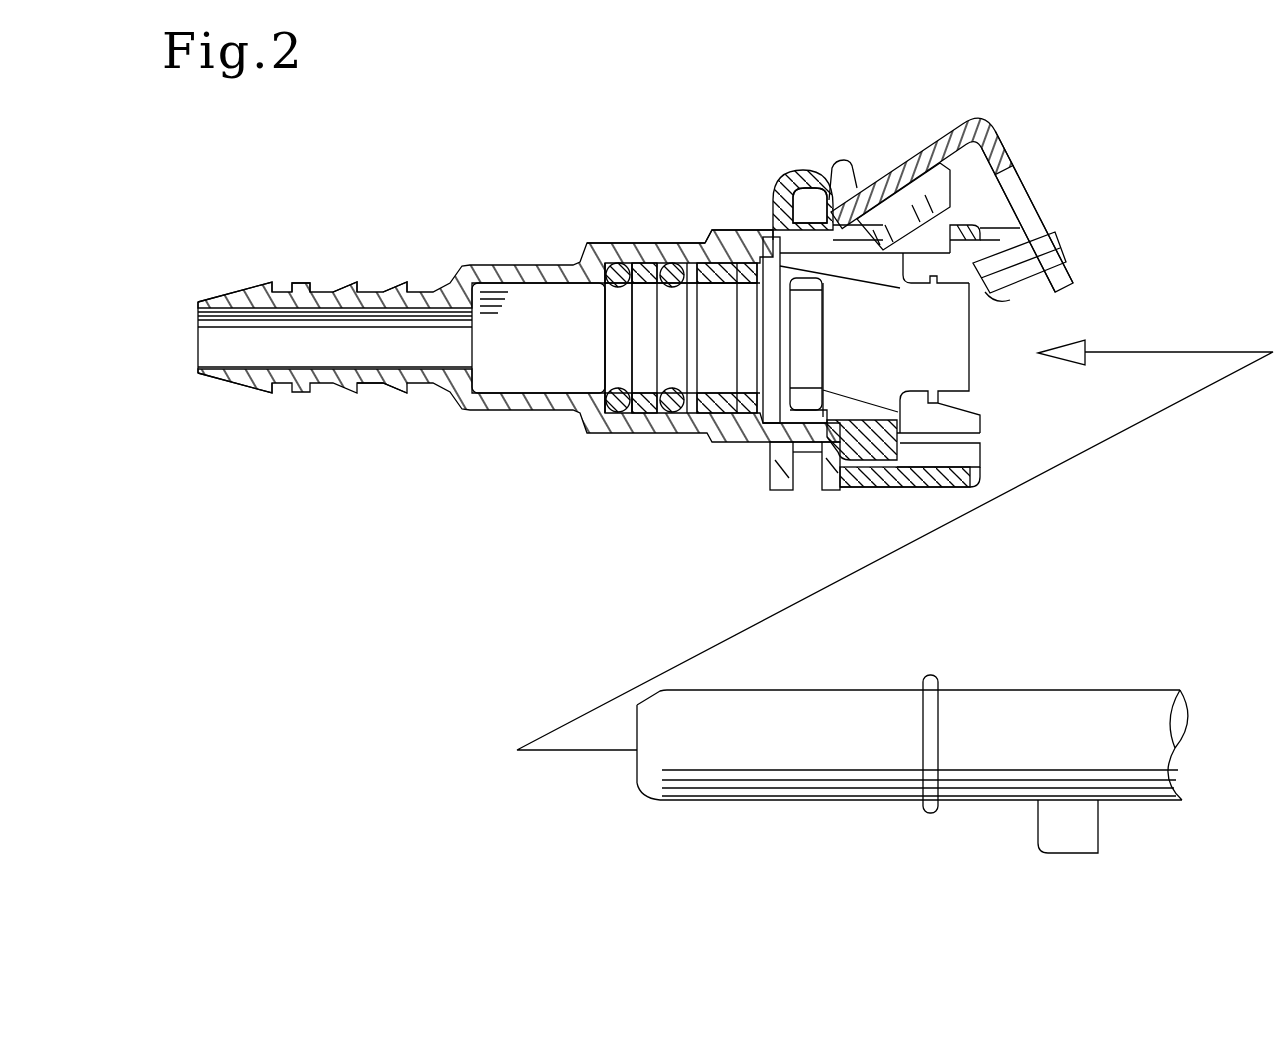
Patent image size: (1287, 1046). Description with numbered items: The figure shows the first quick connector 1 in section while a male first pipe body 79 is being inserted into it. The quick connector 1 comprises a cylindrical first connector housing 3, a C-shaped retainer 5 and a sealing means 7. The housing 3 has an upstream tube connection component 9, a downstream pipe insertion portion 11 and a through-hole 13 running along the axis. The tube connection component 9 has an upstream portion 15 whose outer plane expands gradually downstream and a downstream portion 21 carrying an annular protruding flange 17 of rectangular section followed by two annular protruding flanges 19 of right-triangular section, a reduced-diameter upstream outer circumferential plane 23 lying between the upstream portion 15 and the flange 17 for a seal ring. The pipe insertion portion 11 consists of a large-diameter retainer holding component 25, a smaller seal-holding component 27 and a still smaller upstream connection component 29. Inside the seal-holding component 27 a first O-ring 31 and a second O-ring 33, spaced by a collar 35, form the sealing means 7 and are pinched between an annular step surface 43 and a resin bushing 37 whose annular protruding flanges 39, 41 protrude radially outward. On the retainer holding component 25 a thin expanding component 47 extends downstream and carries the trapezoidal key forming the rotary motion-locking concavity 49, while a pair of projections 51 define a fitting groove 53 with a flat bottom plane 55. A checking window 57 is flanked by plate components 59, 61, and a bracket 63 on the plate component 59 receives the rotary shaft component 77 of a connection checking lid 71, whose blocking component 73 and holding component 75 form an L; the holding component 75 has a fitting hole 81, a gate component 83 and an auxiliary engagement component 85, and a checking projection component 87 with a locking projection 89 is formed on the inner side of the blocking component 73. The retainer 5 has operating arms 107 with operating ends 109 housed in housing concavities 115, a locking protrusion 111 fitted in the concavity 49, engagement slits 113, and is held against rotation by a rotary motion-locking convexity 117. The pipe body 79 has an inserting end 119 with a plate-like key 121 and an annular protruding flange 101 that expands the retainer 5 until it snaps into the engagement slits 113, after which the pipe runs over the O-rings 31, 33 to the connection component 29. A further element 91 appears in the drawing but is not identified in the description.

The quick connector 1 is at (242, 177).
The first connector housing 3 is at (510, 248).
The retainer 5 is at (988, 358).
The sealing means 7 is at (602, 357).
The tube connection component 9 is at (340, 262).
The pipe insertion portion 11 is at (709, 222).
The through-hole 13 is at (340, 350).
The upstream portion 15 is at (270, 290).
The annular protruding flange 17 is at (300, 283).
The annular protruding flanges 19 is at (395, 288).
The downstream portion 21 is at (372, 378).
The upstream outer circumferential plane 23 is at (287, 386).
The retainer holding component 25 is at (950, 415).
The seal-holding component 27 is at (725, 425).
The upstream connection component 29 is at (495, 410).
The first O-ring 31 is at (618, 415).
The second O-ring 33 is at (672, 268).
The collar 35 is at (645, 412).
The resin bushing 37 is at (740, 415).
The annular protruding flange 39 is at (720, 256).
The annular protruding flange 41 is at (770, 245).
The annular step surface 43 is at (618, 268).
The expanding component 47 is at (980, 483).
The rotary motion-locking concavity 49 is at (950, 447).
The projections 51 is at (838, 478).
The fitting groove 53 is at (795, 468).
The bottom plane 55 is at (820, 470).
The checking window 57 is at (922, 245).
The plate component 59 is at (858, 200).
The plate component 61 is at (1020, 237).
The bracket 63 is at (810, 200).
The connection checking lid 71 is at (1001, 117).
The blocking component 73 is at (935, 160).
The holding component 75 is at (1010, 160).
The rotary shaft component 77 is at (790, 195).
The first pipe body 79 is at (1068, 690).
The fitting hole 81 is at (1030, 215).
The gate component 83 is at (1060, 258).
The auxiliary engagement component 85 is at (1023, 272).
The checking projection component 87 is at (892, 200).
The locking projection 89 is at (955, 207).
The shoulder 91 is at (842, 172).
The annular protruding flange 101 is at (930, 680).
The operating arms 107 is at (935, 340).
The operating ends 109 is at (960, 370).
The locking protrusion 111 is at (908, 487).
The engagement slits 113 is at (822, 330).
The housing concavities 115 is at (1000, 300).
The rotary motion-locking convexity 117 is at (800, 430).
The inserting end 119 is at (795, 802).
The plate-like key 121 is at (1062, 812).